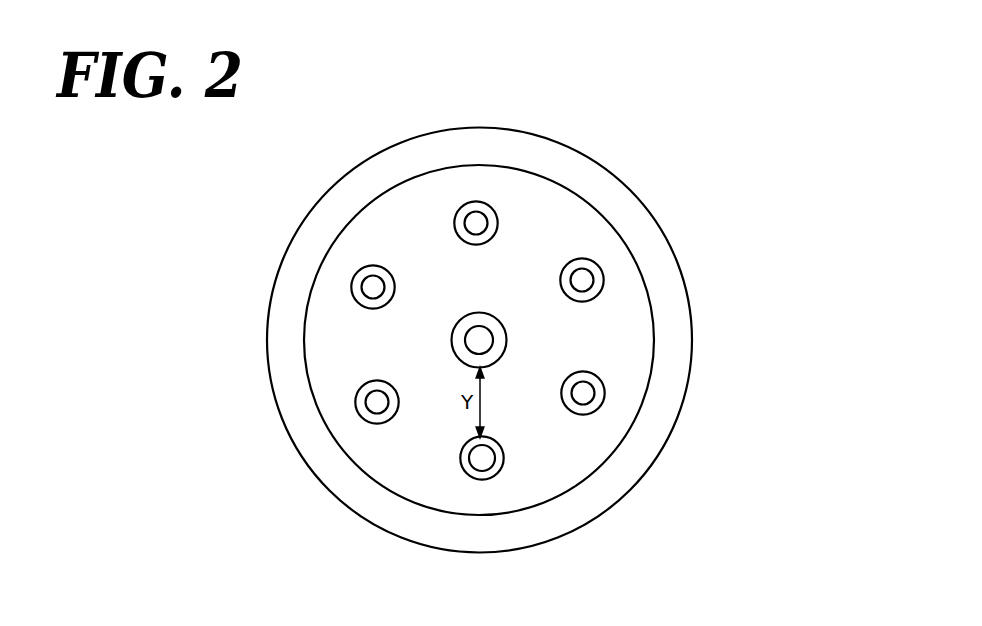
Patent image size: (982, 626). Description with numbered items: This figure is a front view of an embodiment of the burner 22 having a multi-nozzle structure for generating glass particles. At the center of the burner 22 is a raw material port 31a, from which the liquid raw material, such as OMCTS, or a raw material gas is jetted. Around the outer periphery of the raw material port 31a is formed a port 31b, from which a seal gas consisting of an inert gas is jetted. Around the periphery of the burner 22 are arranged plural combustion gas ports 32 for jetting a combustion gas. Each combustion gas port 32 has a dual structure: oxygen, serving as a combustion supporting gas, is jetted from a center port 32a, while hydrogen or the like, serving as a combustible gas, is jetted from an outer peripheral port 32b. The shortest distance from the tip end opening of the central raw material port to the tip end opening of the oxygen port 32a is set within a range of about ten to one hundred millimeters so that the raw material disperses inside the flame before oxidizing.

The burner 22 is at (569, 129).
The raw material port 31a is at (470, 339).
The seal gas port 31b is at (470, 317).
The combustion gas port 32 is at (477, 341).
The center port 32a is at (473, 457).
The outer peripheral port 32b is at (489, 440).